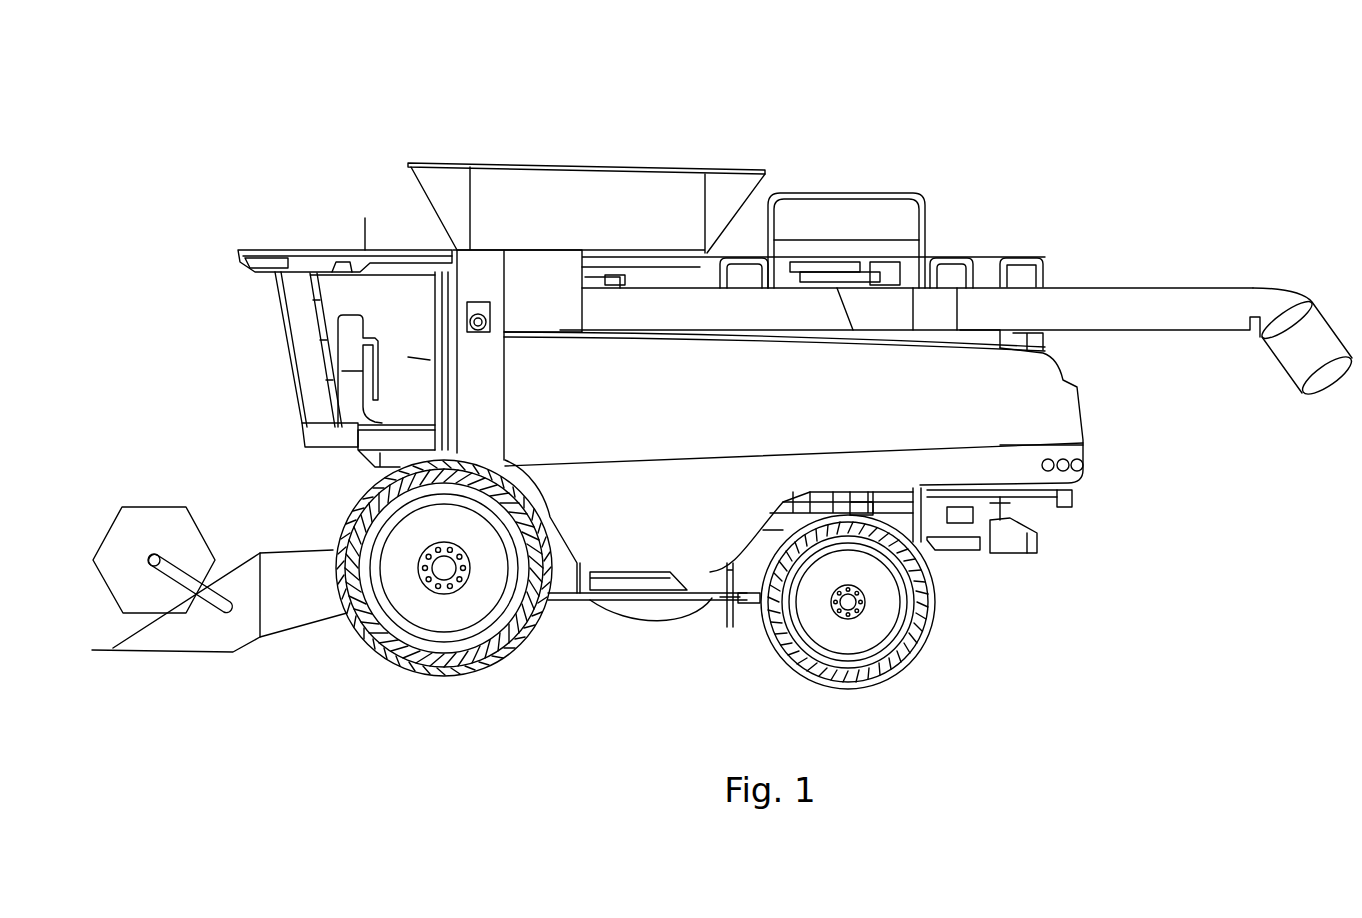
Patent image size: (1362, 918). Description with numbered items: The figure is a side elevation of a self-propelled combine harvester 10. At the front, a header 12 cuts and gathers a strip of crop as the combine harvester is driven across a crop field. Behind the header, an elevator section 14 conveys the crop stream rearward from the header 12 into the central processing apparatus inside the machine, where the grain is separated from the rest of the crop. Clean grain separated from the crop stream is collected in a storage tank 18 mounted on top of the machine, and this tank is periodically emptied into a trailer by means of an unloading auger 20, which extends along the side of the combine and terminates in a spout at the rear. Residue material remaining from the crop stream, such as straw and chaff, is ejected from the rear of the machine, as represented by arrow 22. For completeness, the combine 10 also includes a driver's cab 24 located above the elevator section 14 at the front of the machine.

The combine harvester 10 is at (280, 155).
The header 12 is at (183, 653).
The elevator section 14 is at (305, 613).
The storage tank 18 is at (662, 159).
The unloading auger 20 is at (880, 317).
The arrow 22 is at (1110, 559).
The driver's cab 24 is at (307, 393).